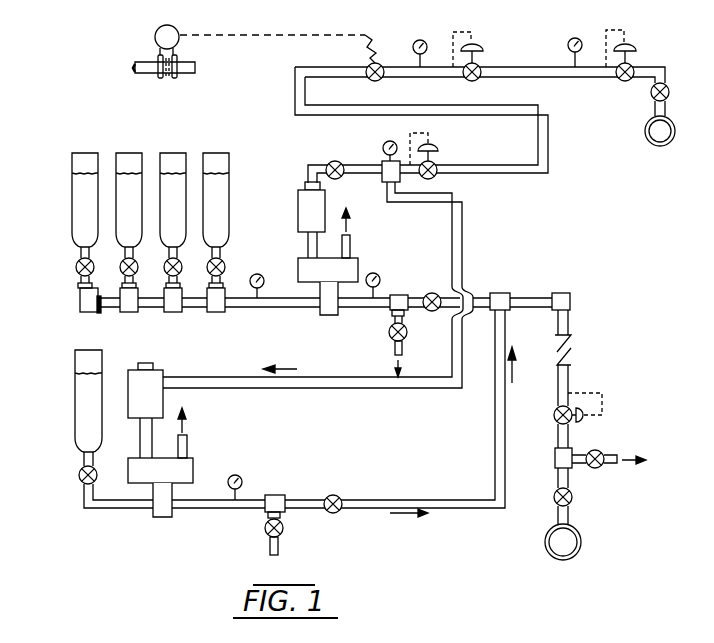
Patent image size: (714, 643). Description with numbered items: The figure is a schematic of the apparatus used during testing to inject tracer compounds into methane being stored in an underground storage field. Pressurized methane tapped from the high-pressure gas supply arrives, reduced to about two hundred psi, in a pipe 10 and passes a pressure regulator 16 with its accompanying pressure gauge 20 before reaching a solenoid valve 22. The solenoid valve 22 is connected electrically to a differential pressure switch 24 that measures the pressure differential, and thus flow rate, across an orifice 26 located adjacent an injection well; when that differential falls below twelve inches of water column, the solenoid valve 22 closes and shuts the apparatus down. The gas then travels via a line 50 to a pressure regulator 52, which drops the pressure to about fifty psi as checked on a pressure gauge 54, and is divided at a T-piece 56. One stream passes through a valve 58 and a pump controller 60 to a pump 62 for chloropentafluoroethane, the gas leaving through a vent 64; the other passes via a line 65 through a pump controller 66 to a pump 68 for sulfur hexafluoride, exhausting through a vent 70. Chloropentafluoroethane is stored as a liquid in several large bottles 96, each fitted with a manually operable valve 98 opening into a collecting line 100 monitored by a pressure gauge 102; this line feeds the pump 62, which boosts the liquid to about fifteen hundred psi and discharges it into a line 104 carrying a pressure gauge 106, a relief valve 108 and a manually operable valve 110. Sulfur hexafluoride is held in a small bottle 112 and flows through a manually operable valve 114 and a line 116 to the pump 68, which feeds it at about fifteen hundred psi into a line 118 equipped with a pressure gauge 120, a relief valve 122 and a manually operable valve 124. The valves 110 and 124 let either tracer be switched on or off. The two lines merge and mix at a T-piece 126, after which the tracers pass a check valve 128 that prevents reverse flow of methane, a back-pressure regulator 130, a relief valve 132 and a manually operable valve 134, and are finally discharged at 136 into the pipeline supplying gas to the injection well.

The pipe 10 is at (648, 123).
The pressure regulator 16 is at (478, 46).
The pressure gauge 20 is at (421, 40).
The solenoid valve 22 is at (379, 62).
The differential pressure switch 24 is at (176, 27).
The orifice 26 is at (159, 60).
The line 50 is at (549, 153).
The pressure regulator 52 is at (434, 148).
The pressure gauge 54 is at (383, 149).
The T-piece 56 is at (387, 178).
The valve 58 is at (326, 162).
The pump controller 60 is at (298, 203).
The pump 62 is at (352, 270).
The vent 64 is at (352, 244).
The line 65 is at (462, 244).
The pump controller 66 is at (160, 373).
The pump 68 is at (190, 465).
The vent 70 is at (190, 440).
The bottles 96 is at (77, 222).
The manually operable valve 98 is at (76, 268).
The collecting line 100 is at (232, 322).
The pressure gauge 102 is at (260, 272).
The line 104 is at (362, 320).
The pressure gauge 106 is at (381, 276).
The relief valve 108 is at (388, 338).
The manually operable valve 110 is at (428, 294).
The bottle 112 is at (80, 403).
The manually operable valve 114 is at (78, 472).
The line 116 is at (122, 508).
The line 118 is at (215, 506).
The pressure gauge 120 is at (242, 476).
The relief valve 122 is at (283, 532).
The manually operable valve 124 is at (340, 495).
The T-piece 126 is at (503, 292).
The check valve 128 is at (574, 340).
The back-pressure regulator 130 is at (602, 400).
The relief valve 132 is at (600, 452).
The manually operable valve 134 is at (573, 497).
The discharge point 136 is at (580, 534).